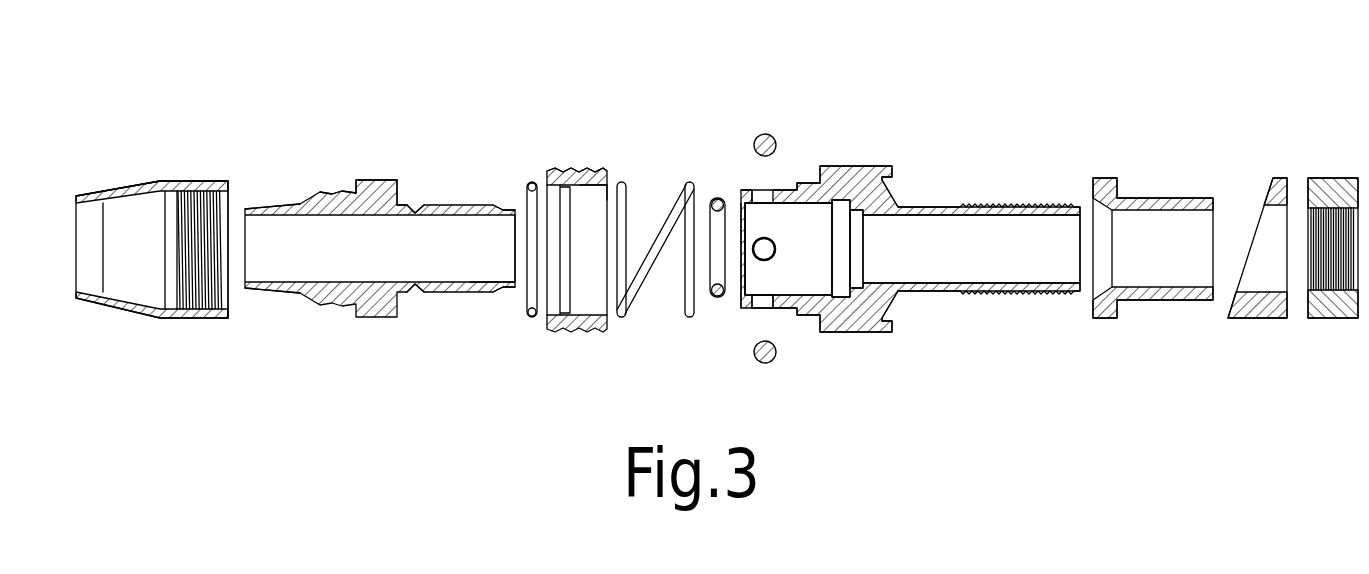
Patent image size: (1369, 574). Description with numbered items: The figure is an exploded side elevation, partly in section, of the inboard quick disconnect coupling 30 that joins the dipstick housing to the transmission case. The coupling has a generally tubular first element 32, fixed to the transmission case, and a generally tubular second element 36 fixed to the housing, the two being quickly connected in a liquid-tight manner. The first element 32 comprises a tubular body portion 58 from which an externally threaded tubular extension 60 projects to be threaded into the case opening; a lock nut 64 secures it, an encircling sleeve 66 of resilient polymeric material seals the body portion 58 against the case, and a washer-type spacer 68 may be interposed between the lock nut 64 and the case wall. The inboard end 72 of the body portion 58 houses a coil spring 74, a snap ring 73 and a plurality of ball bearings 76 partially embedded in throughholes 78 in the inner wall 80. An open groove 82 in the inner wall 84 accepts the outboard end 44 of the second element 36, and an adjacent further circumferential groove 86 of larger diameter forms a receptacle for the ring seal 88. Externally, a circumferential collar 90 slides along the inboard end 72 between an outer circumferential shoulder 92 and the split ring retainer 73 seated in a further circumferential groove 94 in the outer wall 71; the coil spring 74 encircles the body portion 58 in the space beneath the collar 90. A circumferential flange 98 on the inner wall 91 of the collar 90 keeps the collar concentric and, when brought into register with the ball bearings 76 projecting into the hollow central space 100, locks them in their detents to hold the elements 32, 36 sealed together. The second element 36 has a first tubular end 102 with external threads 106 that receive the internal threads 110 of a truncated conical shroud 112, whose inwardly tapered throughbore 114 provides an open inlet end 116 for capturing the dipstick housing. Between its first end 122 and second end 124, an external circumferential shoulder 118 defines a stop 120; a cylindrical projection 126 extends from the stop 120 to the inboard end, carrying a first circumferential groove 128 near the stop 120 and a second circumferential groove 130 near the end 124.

The inboard quick disconnect coupling 30 is at (661, 126).
The first element 32 is at (889, 232).
The second element 36 is at (379, 250).
The outboard end of the second element 44 is at (508, 288).
The body portion 58 is at (867, 323).
The externally threaded tubular extension 60 is at (950, 210).
The lock nut 64 is at (1338, 316).
The encircling sleeve 66 is at (1143, 200).
The washer-type spacer 68 is at (1278, 188).
The outer wall of the body portion 71 is at (778, 217).
The inboard end of the body portion 72 is at (739, 304).
The snap ring 73 is at (534, 318).
The coil spring 74 is at (642, 280).
The ball bearings 76 is at (762, 135).
The throughholes 78 is at (765, 302).
The inner wall of the body portion 80 is at (797, 289).
The open groove 82 is at (858, 245).
The inner wall 84 is at (886, 271).
The further circumferential groove 86 is at (836, 183).
The ring seal 88 is at (717, 298).
The circumferential collar 90 is at (605, 218).
The inner wall of the collar 91 is at (604, 183).
The outer circumferential shoulder 92 is at (797, 193).
The further circumferential groove 94 is at (752, 188).
The circumferential flange 98 is at (583, 175).
The hollow central space 100 is at (781, 215).
The first tubular end 102 is at (268, 208).
The external threads 106 is at (328, 190).
The internal threads 110 is at (212, 205).
The truncated conical shroud 112 is at (155, 180).
The inwardly tapered throughbore 114 is at (171, 234).
The open inlet end 116 is at (232, 218).
The external circumferential shoulder 118 is at (377, 179).
The stop 120 is at (402, 190).
The first end of the second element 122 is at (250, 273).
The second end of the second element 124 is at (512, 264).
The cylindrical projection 126 is at (453, 290).
The first circumferential groove 128 is at (420, 208).
The second circumferential groove 130 is at (503, 208).